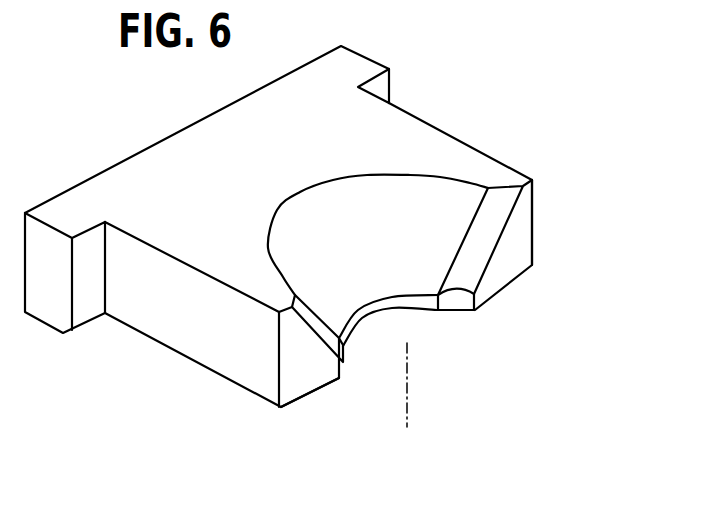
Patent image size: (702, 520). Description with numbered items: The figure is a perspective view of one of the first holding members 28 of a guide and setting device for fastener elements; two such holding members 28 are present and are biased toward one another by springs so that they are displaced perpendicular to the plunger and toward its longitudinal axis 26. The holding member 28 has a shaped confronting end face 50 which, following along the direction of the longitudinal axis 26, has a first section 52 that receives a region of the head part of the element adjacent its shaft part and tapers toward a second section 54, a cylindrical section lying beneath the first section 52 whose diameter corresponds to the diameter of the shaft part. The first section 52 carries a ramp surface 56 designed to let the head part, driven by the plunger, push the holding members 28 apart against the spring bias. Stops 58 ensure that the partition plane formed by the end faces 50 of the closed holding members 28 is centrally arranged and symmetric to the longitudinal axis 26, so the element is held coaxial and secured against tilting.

The longitudinal axis 26 is at (407, 411).
The first holding member 28 is at (485, 126).
The end face 50 is at (512, 258).
The first section 52 is at (447, 198).
The second section 54 is at (402, 305).
The ramp surface 56 is at (335, 230).
The stop 58 is at (380, 87).